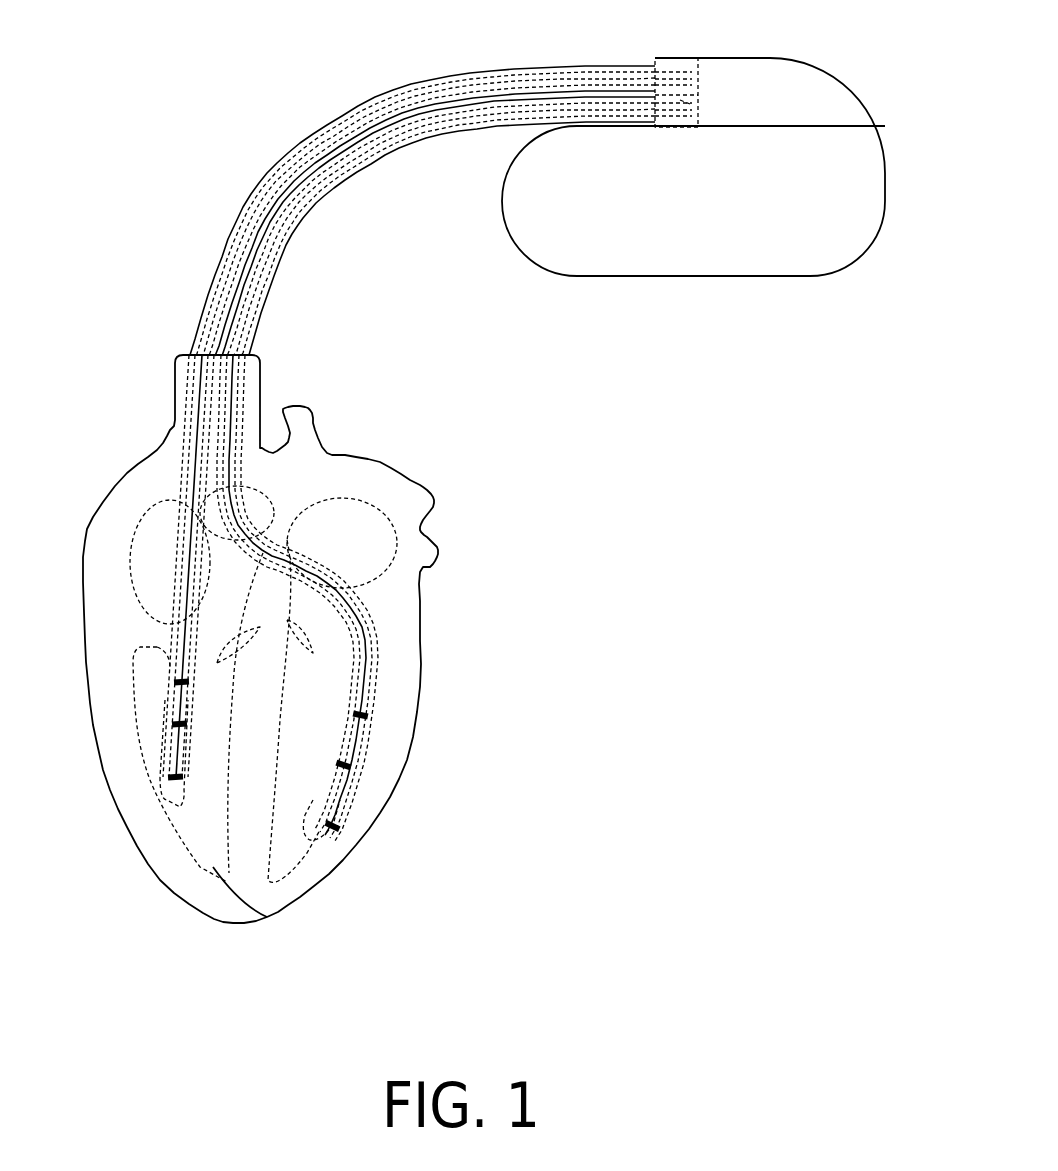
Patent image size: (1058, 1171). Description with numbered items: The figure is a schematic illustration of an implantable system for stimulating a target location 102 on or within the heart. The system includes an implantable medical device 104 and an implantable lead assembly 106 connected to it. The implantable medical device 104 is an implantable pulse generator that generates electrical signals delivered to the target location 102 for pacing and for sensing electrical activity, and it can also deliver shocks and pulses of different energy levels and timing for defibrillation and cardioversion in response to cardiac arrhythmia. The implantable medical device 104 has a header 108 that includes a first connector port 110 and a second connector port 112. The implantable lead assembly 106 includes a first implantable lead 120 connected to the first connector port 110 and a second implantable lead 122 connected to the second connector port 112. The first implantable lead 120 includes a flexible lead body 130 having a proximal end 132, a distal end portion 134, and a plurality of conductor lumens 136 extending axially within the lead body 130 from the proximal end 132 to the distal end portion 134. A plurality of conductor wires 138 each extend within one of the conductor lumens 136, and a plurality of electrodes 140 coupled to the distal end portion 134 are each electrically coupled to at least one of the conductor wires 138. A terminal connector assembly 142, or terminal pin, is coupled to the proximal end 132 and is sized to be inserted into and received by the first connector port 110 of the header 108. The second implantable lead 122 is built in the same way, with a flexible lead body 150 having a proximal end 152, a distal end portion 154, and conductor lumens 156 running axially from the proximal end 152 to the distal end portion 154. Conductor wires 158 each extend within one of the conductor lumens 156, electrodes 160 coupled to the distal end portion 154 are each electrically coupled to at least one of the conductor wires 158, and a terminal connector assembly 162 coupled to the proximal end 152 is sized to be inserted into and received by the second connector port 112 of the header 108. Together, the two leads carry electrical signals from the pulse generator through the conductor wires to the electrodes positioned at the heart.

The target location 102 is at (300, 853).
The implantable medical device 104 is at (719, 174).
The implantable lead assembly 106 is at (262, 133).
The header 108 is at (878, 104).
The first connector port 110 is at (707, 57).
The second connector port 112 is at (700, 110).
The first implantable lead 120 is at (354, 406).
The second implantable lead 122 is at (459, 469).
The lead body 130 is at (350, 108).
The proximal end 132 is at (595, 65).
The distal end portion 134 is at (177, 627).
The conductor lumens 136 is at (230, 217).
The conductor wires 138 is at (225, 250).
The electrodes 140 is at (180, 683).
The terminal connector assembly 142 is at (668, 66).
The lead body 150 is at (307, 210).
The proximal end 152 is at (612, 127).
The distal end portion 154 is at (358, 605).
The conductor lumens 156 is at (506, 111).
The conductor wires 158 is at (232, 323).
The electrodes 160 is at (367, 655).
The terminal connector assembly 162 is at (682, 127).